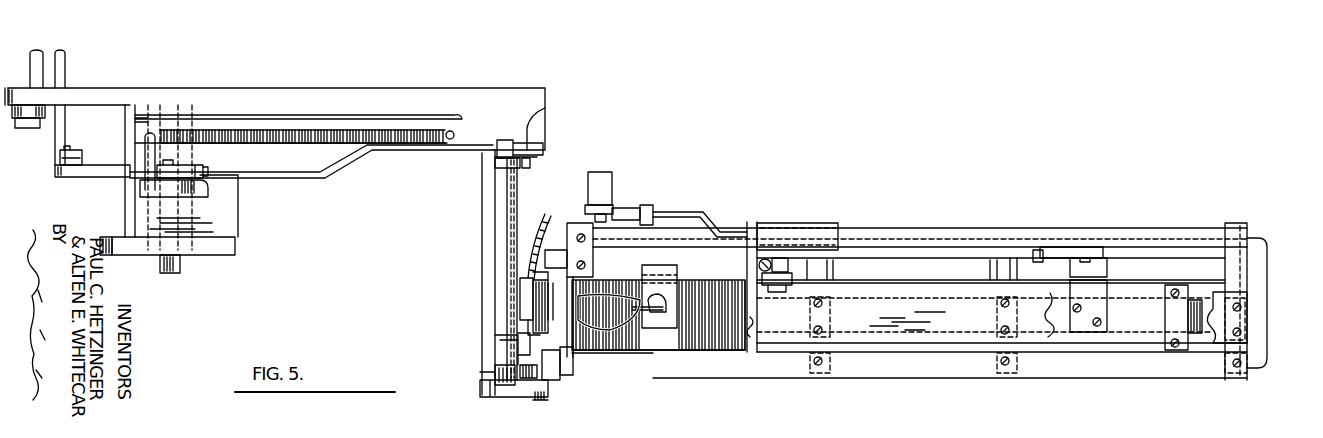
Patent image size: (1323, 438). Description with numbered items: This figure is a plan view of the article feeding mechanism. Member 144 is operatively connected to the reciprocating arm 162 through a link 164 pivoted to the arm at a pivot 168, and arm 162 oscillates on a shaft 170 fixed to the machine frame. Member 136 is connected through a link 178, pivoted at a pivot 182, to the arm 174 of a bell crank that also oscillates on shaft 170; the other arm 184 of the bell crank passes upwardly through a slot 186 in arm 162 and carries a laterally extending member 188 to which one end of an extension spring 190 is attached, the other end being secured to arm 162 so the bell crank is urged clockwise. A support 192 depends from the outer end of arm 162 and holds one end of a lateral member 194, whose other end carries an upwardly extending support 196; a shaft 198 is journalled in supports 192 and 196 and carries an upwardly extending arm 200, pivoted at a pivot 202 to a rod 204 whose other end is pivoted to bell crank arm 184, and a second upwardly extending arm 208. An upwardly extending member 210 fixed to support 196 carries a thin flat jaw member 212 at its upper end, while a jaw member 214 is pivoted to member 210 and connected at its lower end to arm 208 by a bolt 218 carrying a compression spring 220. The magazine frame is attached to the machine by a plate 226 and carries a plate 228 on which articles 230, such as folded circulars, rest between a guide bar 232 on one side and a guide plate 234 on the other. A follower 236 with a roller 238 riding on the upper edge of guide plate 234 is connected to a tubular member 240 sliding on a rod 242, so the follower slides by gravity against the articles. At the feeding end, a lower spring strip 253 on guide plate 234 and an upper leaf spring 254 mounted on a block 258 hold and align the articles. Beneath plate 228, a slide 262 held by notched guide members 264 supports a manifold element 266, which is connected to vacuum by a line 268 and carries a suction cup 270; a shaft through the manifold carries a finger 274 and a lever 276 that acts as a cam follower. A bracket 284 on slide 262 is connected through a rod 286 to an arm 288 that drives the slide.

The member 136 is at (65, 67).
The member 144 is at (30, 49).
The reciprocating arm 162 is at (232, 95).
The link 164 is at (8, 113).
The pivot 168 is at (33, 128).
The shaft 170 is at (172, 275).
The arm of bell crank 174 is at (77, 173).
The link 178 is at (82, 159).
The pivot 182 is at (78, 150).
The arm of bell crank 184 is at (180, 190).
The slot 186 is at (208, 187).
The laterally extending member 188 is at (150, 158).
The extension spring 190 is at (310, 128).
The support 192 is at (538, 145).
The lateral member 194 is at (483, 268).
The support 196 is at (492, 408).
The shaft 198 is at (503, 198).
The arm 200 is at (540, 164).
The pivot 202 is at (526, 127).
The rod 204 is at (345, 160).
The second upwardly extending arm 208 is at (517, 368).
The upwardly extending member 210 is at (558, 385).
The thin flat jaw member 212 is at (530, 353).
The jaw member 214 is at (577, 373).
The bolt 218 is at (493, 392).
The compression spring 220 is at (520, 385).
The plate 226 is at (563, 257).
The plate 228 is at (922, 295).
The articles 230 is at (550, 323).
The guide bar 232 is at (918, 372).
The guide plate 234 is at (877, 275).
The follower 236 is at (748, 353).
The roller 238 is at (775, 275).
The tubular member 240 is at (818, 230).
The rod 242 is at (975, 237).
The lower spring strip 253 is at (565, 280).
The upper leaf spring 254 is at (640, 325).
The block 258 is at (665, 265).
The slide 262 is at (1133, 307).
The guide members 264 is at (1188, 352).
The manifold element 266 is at (527, 318).
The line 268 is at (527, 230).
The suction cup 270 is at (533, 303).
The finger 274 is at (530, 335).
The lever 276 is at (537, 272).
The bracket 284 is at (1102, 270).
The rod 286 is at (645, 206).
The arm 288 is at (602, 176).